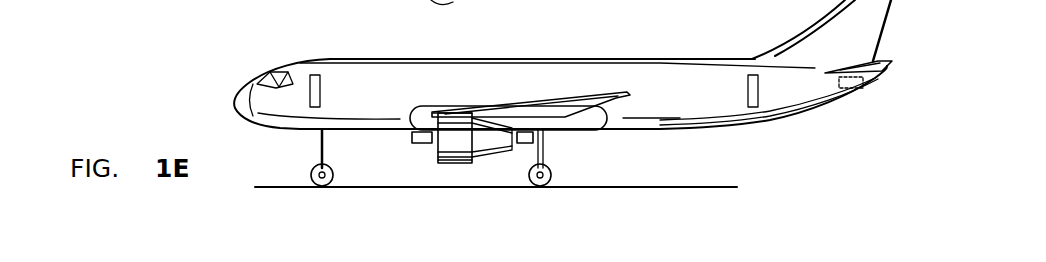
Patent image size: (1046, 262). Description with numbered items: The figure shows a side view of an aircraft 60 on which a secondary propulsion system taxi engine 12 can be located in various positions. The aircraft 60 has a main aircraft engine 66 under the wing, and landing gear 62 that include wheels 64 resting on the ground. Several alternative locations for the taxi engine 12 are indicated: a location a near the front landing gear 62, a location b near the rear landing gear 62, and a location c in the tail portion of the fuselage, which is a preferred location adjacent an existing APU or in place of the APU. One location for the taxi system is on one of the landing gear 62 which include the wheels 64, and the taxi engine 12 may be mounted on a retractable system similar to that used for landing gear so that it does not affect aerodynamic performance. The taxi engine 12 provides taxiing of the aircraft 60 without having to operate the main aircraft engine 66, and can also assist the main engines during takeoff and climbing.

The aircraft 60 is at (542, 60).
The main aircraft engine 66 is at (450, 123).
The landing gear 62 is at (324, 135).
The wheels 64 is at (310, 172).
The taxi engine 12 is at (422, 143).
The position a is at (412, 132).
The position b is at (537, 184).
The position c is at (853, 88).